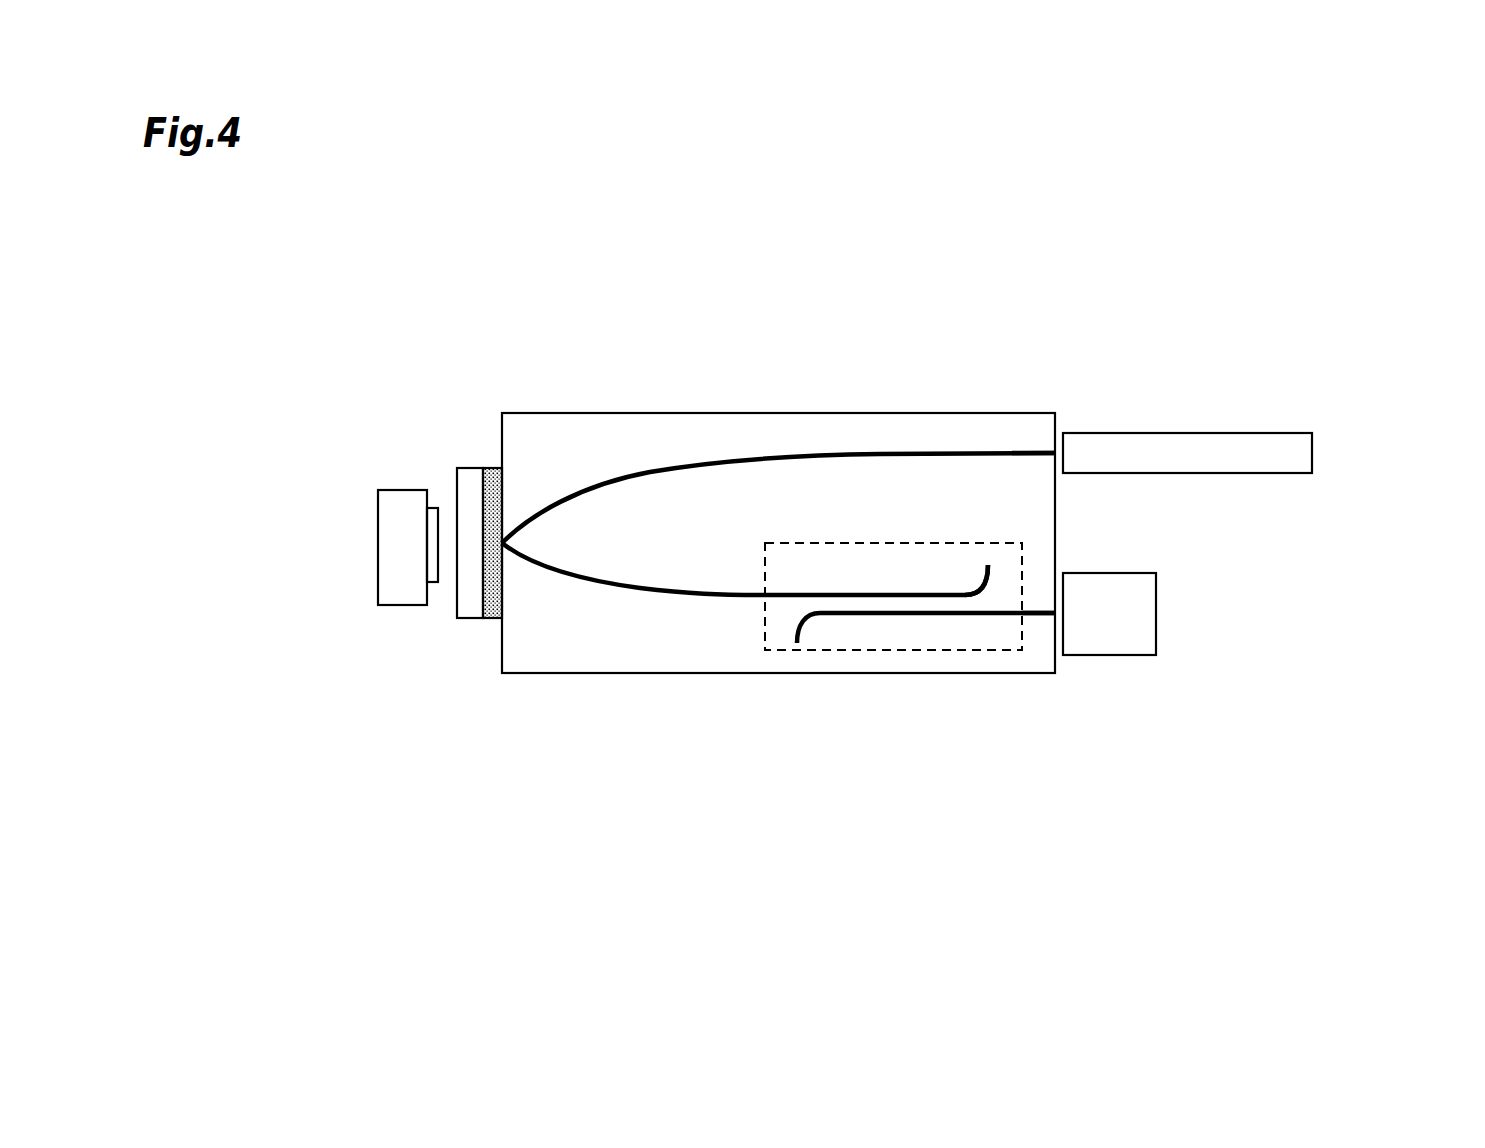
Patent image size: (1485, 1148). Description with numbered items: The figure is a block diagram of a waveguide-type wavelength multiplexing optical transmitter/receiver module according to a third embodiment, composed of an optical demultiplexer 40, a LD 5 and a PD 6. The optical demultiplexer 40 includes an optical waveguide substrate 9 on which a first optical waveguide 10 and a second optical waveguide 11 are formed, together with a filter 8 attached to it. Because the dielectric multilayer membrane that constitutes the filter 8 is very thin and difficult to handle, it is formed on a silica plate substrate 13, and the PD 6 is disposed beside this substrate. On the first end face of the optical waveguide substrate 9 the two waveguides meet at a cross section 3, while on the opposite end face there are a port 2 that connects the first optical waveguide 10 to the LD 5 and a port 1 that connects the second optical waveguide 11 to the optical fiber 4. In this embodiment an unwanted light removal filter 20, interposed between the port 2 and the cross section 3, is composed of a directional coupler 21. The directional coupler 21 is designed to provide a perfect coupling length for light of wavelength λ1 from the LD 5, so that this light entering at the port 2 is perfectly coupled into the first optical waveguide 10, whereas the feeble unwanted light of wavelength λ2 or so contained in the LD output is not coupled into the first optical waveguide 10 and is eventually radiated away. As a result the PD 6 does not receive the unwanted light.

The port 1 is at (1012, 452).
The port 2 is at (1055, 655).
The cross section 3 is at (502, 543).
The optical fiber 4 is at (1237, 433).
The LD 5 is at (1156, 628).
The PD 6 is at (402, 590).
The filter 8 is at (492, 468).
The optical waveguide substrate 9 is at (642, 675).
The first optical waveguide 10 is at (732, 597).
The second optical waveguide 11 is at (882, 452).
The silica plate substrate 13 is at (470, 468).
The unwanted light removal filter 20 is at (1022, 563).
The directional coupler 21 is at (906, 600).
The optical demultiplexer 40 is at (950, 597).